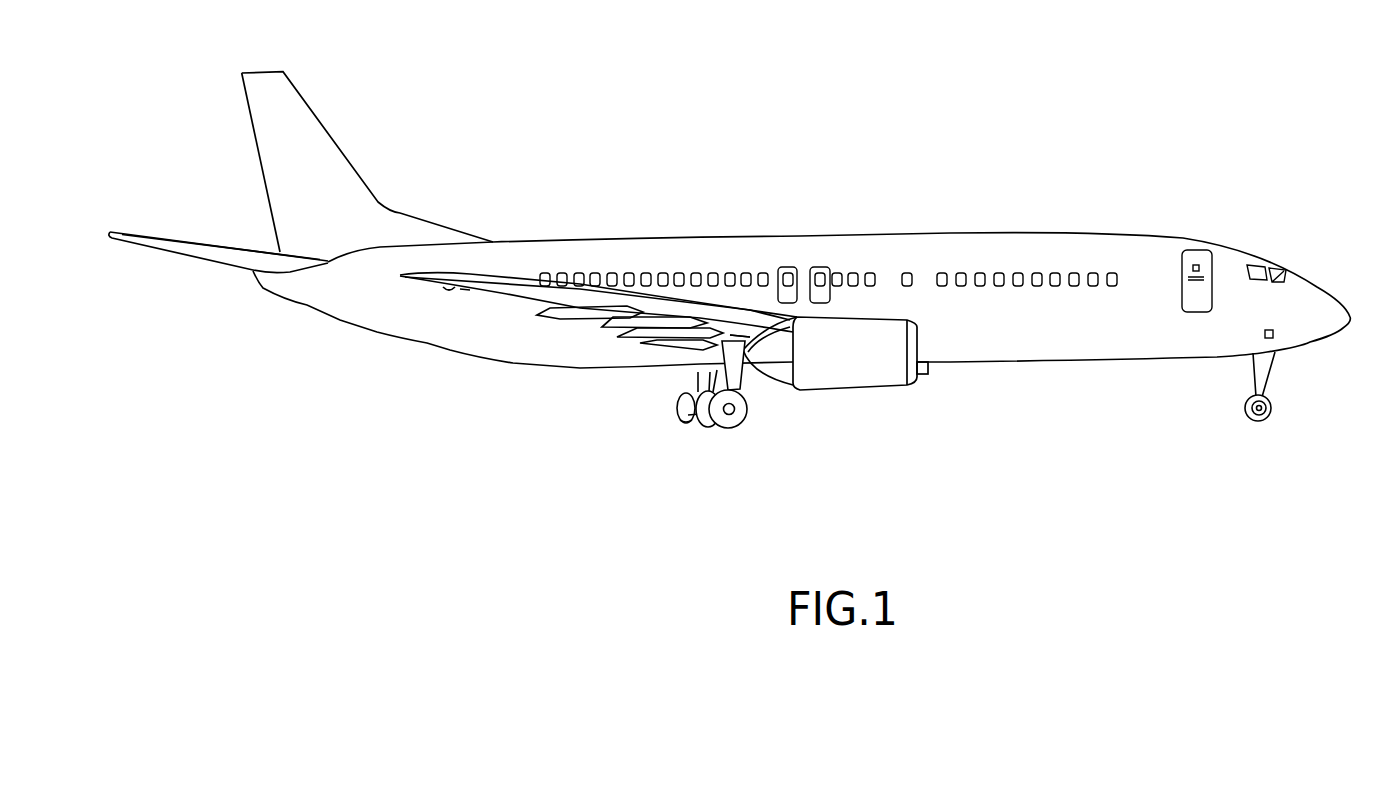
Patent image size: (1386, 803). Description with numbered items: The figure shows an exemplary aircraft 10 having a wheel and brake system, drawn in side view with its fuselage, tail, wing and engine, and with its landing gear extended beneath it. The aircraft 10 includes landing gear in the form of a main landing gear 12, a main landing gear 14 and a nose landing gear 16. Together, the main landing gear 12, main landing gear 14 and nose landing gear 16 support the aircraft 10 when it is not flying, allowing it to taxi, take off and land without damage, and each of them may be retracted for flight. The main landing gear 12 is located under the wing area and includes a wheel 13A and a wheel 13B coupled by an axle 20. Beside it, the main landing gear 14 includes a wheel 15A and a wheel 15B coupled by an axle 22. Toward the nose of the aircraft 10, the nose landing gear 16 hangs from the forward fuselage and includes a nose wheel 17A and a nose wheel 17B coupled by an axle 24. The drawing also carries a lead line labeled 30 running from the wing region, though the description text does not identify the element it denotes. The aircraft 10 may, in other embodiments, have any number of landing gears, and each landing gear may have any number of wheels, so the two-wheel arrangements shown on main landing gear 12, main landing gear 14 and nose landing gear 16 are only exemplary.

The aircraft 10 is at (915, 126).
The main landing gear 12 is at (693, 432).
The wheel 13A is at (683, 392).
The wheel 13B is at (695, 417).
The main landing gear 14 is at (721, 453).
The wheel 15A is at (745, 405).
The wheel 15B is at (707, 413).
The nose landing gear 16 is at (1265, 414).
The nose wheel 17A is at (1245, 412).
The nose wheel 17B is at (1270, 413).
The axle 20 is at (688, 415).
The axle 22 is at (732, 414).
The axle 24 is at (1262, 414).
The wing 30 is at (730, 333).